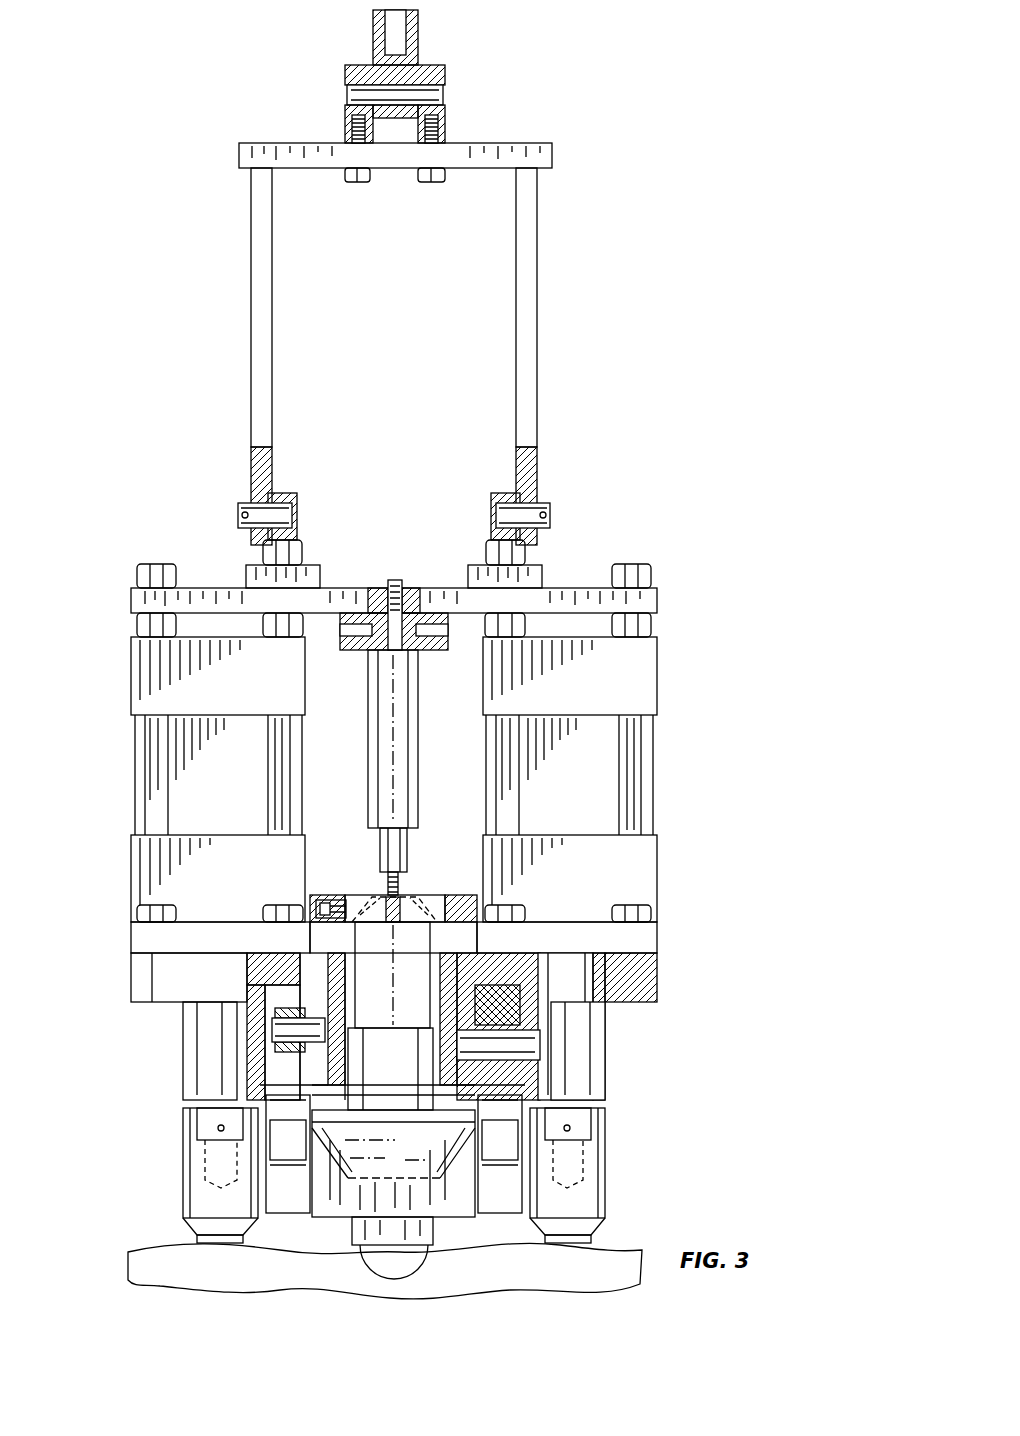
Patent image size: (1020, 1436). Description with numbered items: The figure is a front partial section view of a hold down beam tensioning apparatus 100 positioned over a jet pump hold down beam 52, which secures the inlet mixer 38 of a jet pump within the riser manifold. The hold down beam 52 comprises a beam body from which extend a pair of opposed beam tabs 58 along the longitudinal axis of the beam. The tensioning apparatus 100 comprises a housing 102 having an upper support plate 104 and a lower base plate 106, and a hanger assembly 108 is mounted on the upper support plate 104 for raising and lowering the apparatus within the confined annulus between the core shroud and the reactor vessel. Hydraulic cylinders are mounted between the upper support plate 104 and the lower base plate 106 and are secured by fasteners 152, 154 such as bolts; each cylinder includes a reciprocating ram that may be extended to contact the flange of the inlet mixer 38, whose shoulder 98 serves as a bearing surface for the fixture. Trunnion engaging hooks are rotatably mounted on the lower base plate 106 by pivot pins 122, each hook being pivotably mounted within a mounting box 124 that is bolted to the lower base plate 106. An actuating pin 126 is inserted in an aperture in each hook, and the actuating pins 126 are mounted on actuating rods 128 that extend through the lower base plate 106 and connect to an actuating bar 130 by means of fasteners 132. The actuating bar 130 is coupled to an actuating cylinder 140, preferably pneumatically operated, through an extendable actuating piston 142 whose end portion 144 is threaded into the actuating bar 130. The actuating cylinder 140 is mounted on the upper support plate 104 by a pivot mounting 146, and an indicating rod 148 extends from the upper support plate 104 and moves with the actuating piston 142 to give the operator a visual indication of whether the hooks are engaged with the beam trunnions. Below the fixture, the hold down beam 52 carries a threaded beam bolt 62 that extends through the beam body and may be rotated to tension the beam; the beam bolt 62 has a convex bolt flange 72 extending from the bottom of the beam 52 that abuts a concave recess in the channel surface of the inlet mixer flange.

The inlet mixer 38 is at (150, 1258).
The jet pump hold down beam 52 is at (436, 1161).
The beam tabs 58 is at (430, 1196).
The beam bolt 62 is at (385, 893).
The bolt flange 72 is at (394, 1254).
The shoulder 98 is at (598, 1240).
The beam tensioning apparatus 100 is at (200, 280).
The housing 102 is at (145, 1010).
The upper support plate 104 is at (131, 600).
The lower base plate 106 is at (155, 937).
The hanger assembly 108 is at (528, 134).
The pivot pins 122 is at (530, 1048).
The mounting box 124 is at (520, 1020).
The actuating pin 126 is at (282, 1047).
The actuating rods 128 is at (315, 970).
The actuating bar 130 is at (372, 897).
The fasteners 132 is at (330, 899).
The actuating cylinder 140 is at (398, 720).
The actuating piston 142 is at (398, 852).
The end portion 144 is at (402, 902).
The pivot mounting 146 is at (420, 653).
The indicating rod 148 is at (394, 581).
The fasteners 152 is at (158, 562).
The fasteners 154 is at (137, 912).